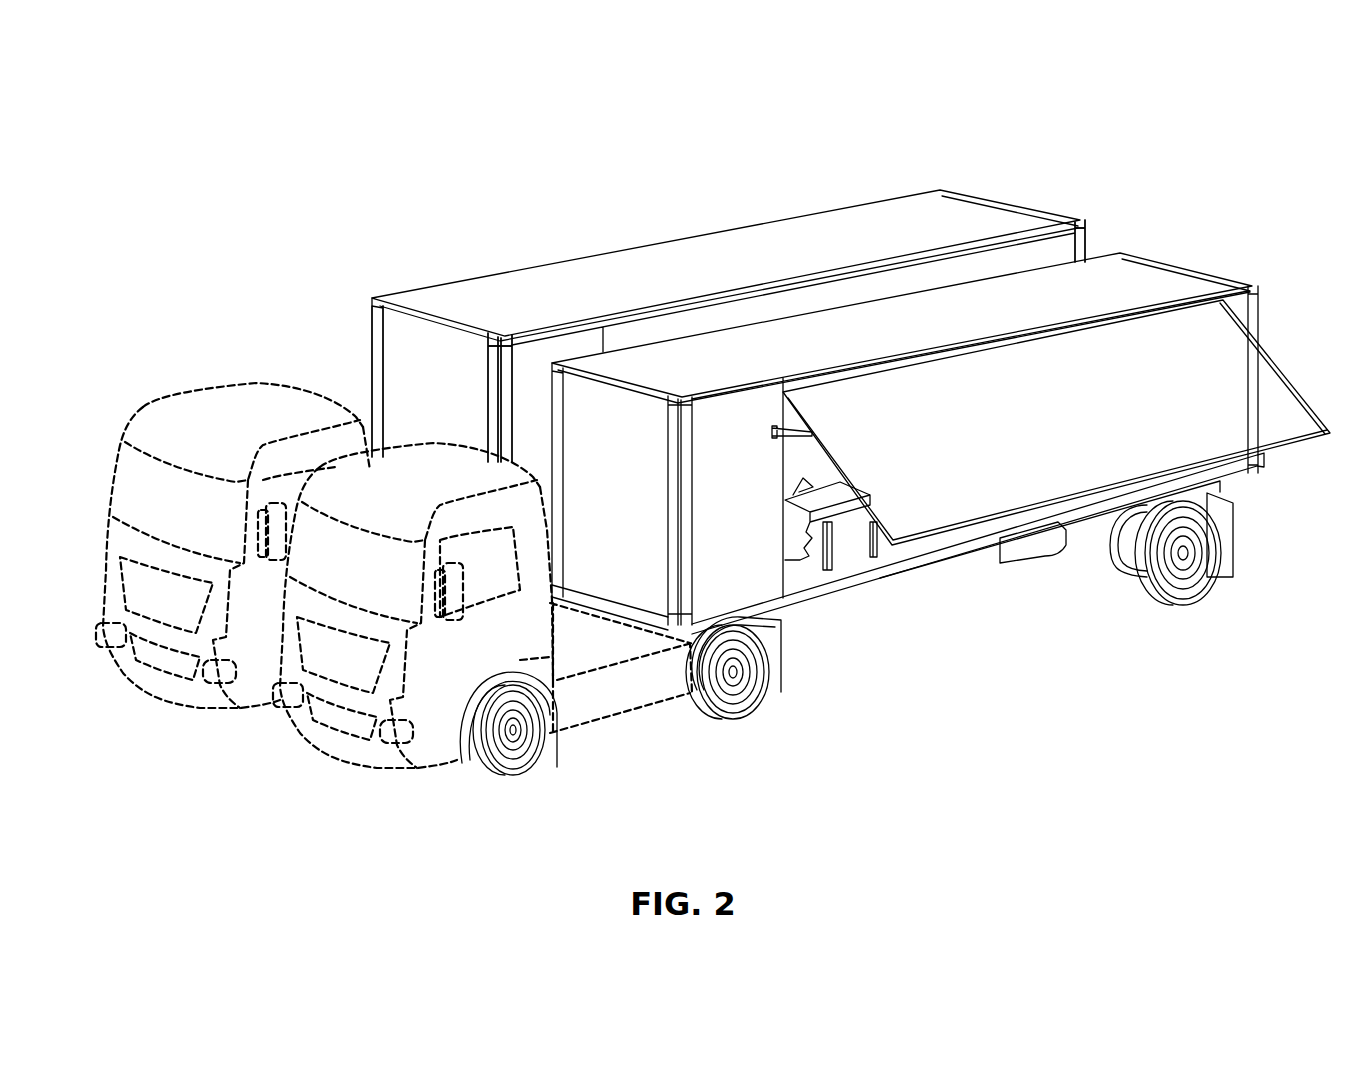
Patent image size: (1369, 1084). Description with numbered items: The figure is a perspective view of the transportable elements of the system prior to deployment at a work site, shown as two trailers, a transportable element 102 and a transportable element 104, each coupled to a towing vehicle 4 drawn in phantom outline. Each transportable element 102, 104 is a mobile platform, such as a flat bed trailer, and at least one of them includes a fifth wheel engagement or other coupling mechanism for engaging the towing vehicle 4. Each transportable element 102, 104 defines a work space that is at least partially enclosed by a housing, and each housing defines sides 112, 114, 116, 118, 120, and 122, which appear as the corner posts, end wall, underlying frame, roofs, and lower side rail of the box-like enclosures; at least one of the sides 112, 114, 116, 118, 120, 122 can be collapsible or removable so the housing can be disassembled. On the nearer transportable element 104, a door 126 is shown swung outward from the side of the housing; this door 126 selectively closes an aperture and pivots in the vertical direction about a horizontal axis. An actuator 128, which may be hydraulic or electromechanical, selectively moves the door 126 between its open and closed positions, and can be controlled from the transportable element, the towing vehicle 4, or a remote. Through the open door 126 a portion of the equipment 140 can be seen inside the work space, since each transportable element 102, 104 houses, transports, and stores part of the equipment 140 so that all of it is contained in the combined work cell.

The towing vehicle 4 is at (180, 414).
The transportable element 102 is at (692, 292).
The transportable element 104 is at (854, 415).
The side 112 is at (1094, 222).
The side 114 is at (386, 346).
The side 116 is at (768, 590).
The side 118 is at (1172, 274).
The side 120 is at (575, 256).
The side 122 is at (862, 594).
The door 126 is at (1034, 441).
The actuator 128 is at (814, 432).
The equipment 140 is at (853, 518).